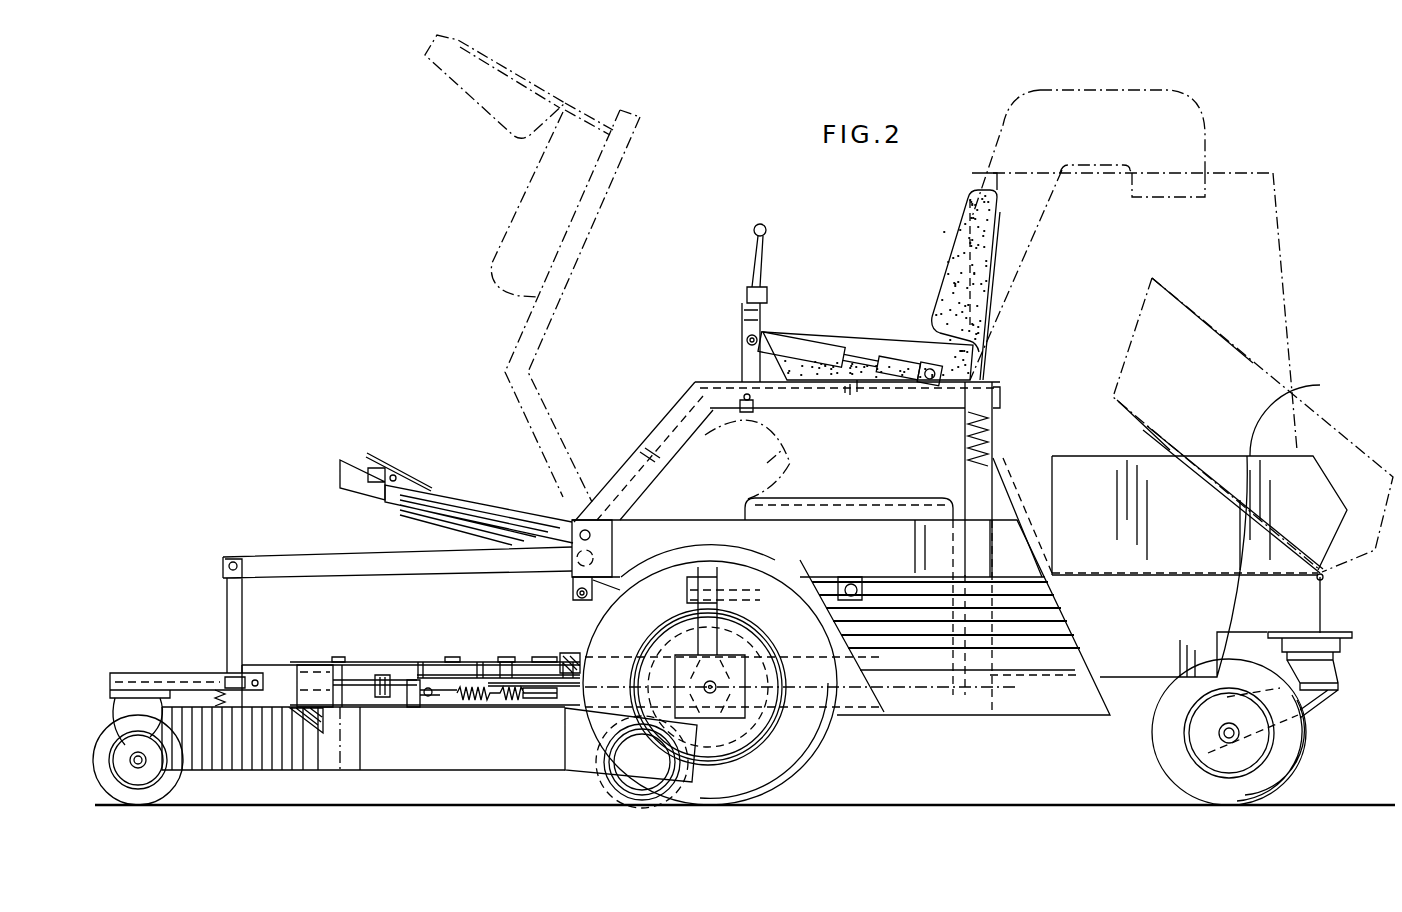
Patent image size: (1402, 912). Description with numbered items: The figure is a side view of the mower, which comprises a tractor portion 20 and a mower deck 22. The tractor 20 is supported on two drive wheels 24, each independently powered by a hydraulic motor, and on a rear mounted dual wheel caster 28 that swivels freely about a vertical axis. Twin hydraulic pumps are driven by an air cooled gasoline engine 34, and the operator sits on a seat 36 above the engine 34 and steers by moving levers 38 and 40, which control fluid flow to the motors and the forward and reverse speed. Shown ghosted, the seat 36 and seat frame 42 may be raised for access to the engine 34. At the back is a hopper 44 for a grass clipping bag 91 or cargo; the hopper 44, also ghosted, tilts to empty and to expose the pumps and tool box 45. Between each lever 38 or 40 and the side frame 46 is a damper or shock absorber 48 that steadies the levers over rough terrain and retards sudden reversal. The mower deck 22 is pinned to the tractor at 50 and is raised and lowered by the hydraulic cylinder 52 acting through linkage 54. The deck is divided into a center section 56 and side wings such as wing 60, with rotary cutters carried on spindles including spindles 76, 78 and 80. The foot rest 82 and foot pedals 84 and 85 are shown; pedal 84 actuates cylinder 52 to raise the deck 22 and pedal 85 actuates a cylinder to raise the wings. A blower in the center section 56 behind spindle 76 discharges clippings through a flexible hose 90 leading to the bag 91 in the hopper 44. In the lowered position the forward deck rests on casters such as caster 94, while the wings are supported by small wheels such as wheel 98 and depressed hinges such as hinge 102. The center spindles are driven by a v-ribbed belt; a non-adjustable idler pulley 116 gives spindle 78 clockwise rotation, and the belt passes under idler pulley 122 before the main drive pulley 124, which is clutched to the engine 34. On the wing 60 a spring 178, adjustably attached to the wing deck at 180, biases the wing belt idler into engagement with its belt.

The tractor portion 20 is at (1040, 735).
The mower deck 22 is at (408, 782).
The drive wheels 24 is at (808, 760).
The rear mounted dual wheel caster 28 is at (1175, 768).
The air cooled gasoline engine 34 is at (880, 700).
The seat 36 is at (513, 230).
The lever 38 is at (762, 268).
The lever 40 is at (750, 357).
The seat frame 42 is at (560, 433).
The hopper 44 is at (1287, 390).
The tool box 45 is at (1277, 613).
The side frame 46 is at (877, 398).
The damper or shock absorber 48 is at (807, 347).
The pin connection of mower deck to tractor 50 is at (710, 702).
The hydraulic cylinder 52 is at (790, 567).
The linkage 54 is at (240, 620).
The center section 56 is at (263, 767).
The side wing 60 is at (493, 753).
The spindle 76 is at (330, 658).
The spindle 78 is at (452, 657).
The spindle 80 is at (537, 657).
The foot rest 82 is at (495, 495).
The foot pedal 84 is at (402, 475).
The foot pedal 85 is at (399, 472).
The flexible hose 90 is at (1198, 117).
The bag 91 is at (1280, 228).
The caster 94 is at (163, 673).
The small wheel 98 is at (627, 798).
The depressed hinge 102 is at (297, 728).
The non-adjustable idler pulley 116 is at (392, 680).
The idler pulley 122 is at (605, 650).
The main drive pulley 124 is at (703, 575).
The spring 178 is at (483, 700).
The adjustable spring attachment point 180 is at (417, 707).